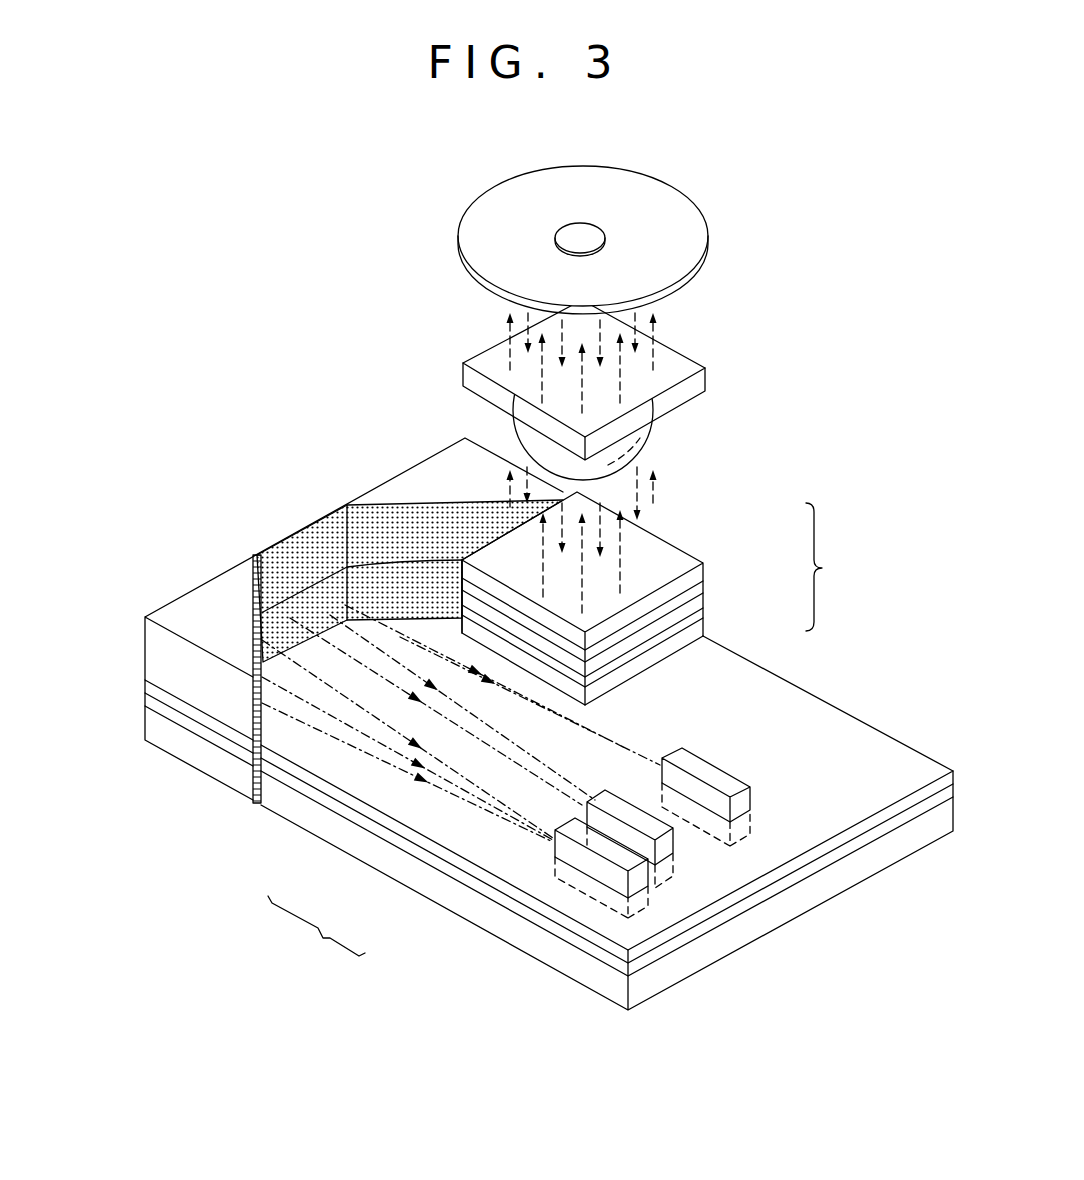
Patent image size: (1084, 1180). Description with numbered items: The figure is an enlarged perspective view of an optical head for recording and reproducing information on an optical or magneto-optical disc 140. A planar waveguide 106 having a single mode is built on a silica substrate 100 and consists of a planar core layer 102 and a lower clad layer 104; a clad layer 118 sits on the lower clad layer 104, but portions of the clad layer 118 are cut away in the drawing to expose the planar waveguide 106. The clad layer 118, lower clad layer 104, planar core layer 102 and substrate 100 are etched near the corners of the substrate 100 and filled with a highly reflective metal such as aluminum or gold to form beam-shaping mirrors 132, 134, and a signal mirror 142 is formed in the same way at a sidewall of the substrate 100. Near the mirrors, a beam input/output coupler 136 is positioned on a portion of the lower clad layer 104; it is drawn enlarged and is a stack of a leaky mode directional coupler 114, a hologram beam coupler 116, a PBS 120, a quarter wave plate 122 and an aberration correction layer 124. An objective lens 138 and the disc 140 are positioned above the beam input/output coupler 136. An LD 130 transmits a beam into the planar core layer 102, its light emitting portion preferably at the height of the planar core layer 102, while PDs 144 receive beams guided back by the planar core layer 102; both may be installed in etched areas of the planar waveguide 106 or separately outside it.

The substrate 100 is at (148, 718).
The planar core layer 102 is at (148, 698).
The lower clad layer 104 is at (148, 685).
The planar waveguide 106 is at (316, 932).
The leaky mode directional coupler 114 is at (706, 628).
The hologram beam coupler 116 is at (706, 613).
The clad layer 118 is at (148, 650).
The PBS 120 is at (706, 600).
The quarter wave plate 122 is at (706, 587).
The aberration correction layer 124 is at (706, 572).
The LD 130 is at (600, 876).
The beam-shaping mirror 132 is at (254, 628).
The beam-shaping mirror 134 is at (403, 505).
The beam input/output coupler 136 is at (670, 598).
The objective lens 138 is at (678, 378).
The disc 140 is at (680, 214).
The signal mirror 142 is at (298, 543).
The PDs 144 is at (664, 853).